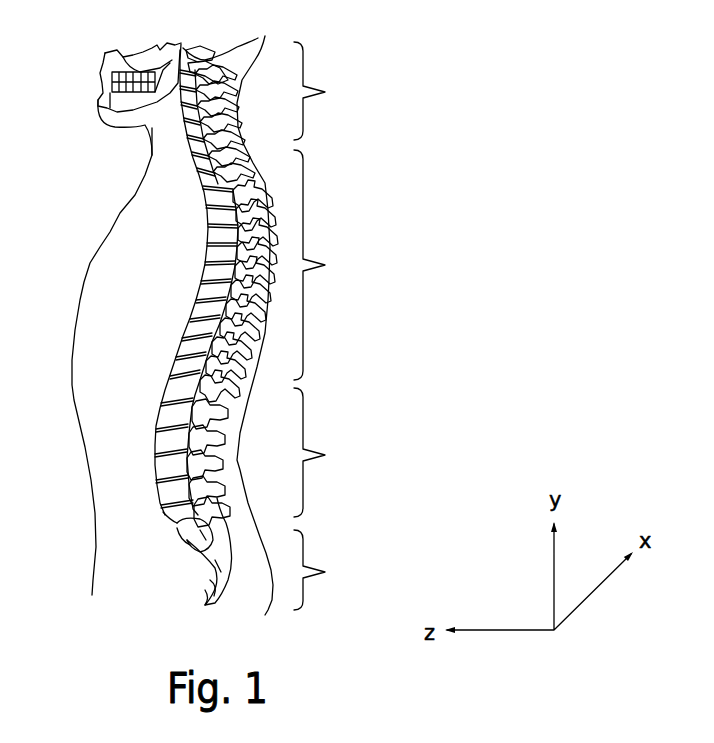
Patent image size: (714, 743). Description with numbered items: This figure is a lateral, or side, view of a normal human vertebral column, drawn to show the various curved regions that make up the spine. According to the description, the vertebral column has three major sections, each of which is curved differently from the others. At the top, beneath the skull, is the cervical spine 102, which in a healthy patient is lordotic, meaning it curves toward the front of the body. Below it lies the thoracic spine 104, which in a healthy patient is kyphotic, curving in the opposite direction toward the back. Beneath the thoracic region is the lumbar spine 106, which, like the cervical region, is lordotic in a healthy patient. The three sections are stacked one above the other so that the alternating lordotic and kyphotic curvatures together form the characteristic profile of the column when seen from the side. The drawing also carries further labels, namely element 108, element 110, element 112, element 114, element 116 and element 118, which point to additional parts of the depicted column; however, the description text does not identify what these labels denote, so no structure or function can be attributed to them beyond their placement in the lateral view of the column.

The cervical spine 102 is at (278, 112).
The thoracic spine 104 is at (273, 276).
The lumbar spine 106 is at (266, 457).
The sacral region 108 is at (277, 554).
The vertebra 110 is at (183, 130).
The intervertebral disc 112 is at (192, 178).
The intervertebral disc 114 is at (150, 450).
The sacrum 116 is at (175, 537).
The coccyx 118 is at (203, 592).